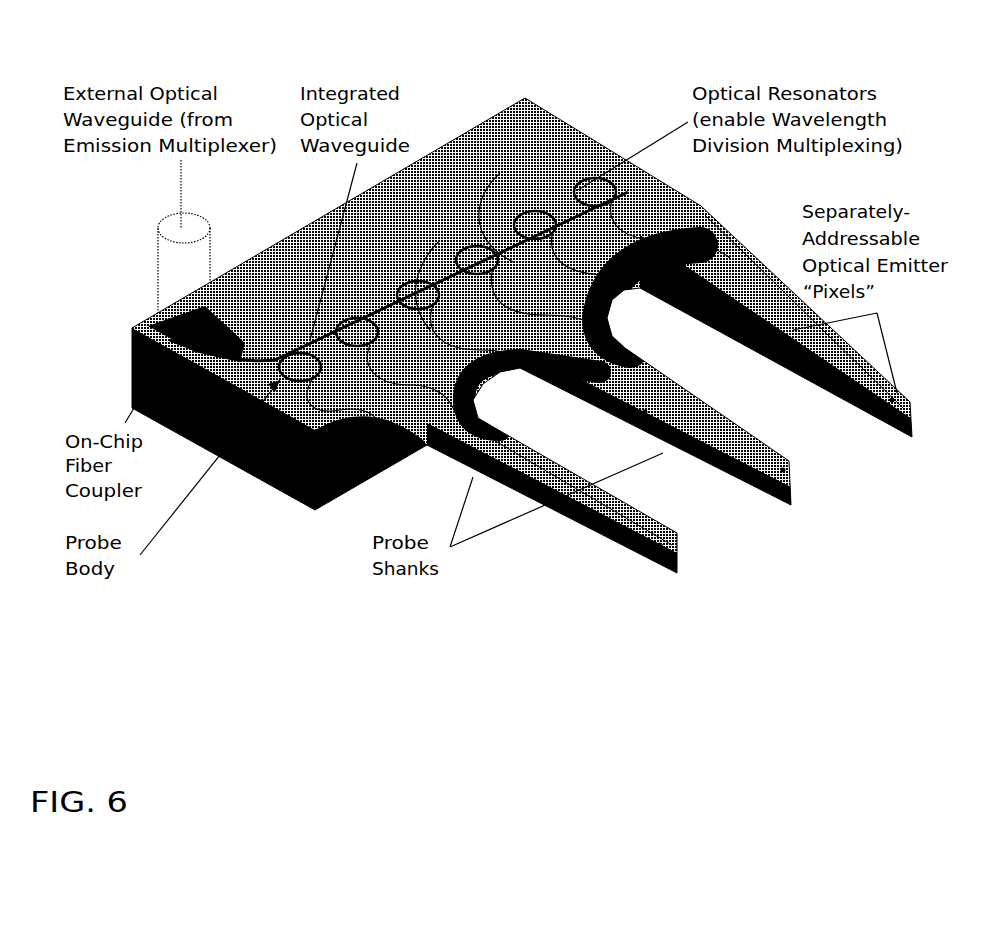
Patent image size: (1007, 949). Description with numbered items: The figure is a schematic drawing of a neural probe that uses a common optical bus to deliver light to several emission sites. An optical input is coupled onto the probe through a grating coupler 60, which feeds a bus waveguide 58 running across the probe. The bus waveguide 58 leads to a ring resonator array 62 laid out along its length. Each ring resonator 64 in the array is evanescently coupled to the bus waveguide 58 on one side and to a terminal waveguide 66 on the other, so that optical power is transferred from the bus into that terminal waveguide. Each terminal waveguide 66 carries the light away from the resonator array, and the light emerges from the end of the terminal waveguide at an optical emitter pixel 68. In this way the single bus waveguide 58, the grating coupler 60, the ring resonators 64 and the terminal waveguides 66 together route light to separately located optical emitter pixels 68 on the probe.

The bus waveguide 58 is at (470, 235).
The grating coupler 60 is at (163, 337).
The ring resonator array 62 is at (227, 460).
The ring resonator 64 is at (500, 173).
The terminal waveguide 66 is at (620, 333).
The optical emitter pixel 68 is at (788, 458).